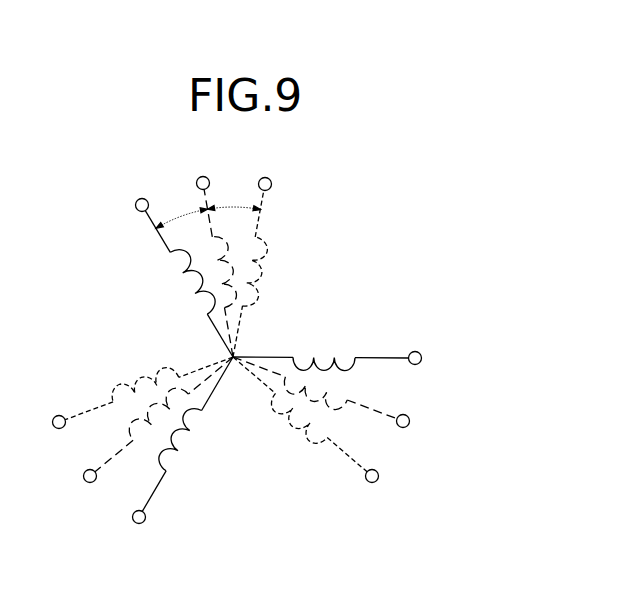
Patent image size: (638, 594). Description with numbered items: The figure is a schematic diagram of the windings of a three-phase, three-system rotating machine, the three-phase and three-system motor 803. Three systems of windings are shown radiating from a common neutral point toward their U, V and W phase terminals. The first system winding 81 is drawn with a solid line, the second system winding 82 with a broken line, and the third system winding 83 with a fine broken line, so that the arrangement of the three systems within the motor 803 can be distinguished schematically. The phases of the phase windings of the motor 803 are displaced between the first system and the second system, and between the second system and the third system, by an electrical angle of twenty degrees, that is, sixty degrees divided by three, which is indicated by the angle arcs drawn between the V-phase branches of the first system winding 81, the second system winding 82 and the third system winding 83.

The three-phase and three-system motor 803 is at (399, 239).
The first system winding 81 is at (193, 279).
The second system winding 82 is at (240, 268).
The third system winding 83 is at (263, 295).